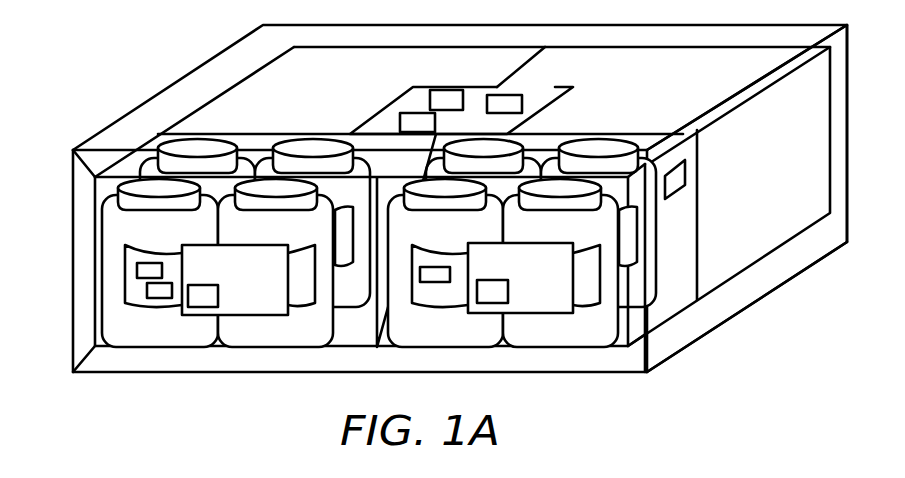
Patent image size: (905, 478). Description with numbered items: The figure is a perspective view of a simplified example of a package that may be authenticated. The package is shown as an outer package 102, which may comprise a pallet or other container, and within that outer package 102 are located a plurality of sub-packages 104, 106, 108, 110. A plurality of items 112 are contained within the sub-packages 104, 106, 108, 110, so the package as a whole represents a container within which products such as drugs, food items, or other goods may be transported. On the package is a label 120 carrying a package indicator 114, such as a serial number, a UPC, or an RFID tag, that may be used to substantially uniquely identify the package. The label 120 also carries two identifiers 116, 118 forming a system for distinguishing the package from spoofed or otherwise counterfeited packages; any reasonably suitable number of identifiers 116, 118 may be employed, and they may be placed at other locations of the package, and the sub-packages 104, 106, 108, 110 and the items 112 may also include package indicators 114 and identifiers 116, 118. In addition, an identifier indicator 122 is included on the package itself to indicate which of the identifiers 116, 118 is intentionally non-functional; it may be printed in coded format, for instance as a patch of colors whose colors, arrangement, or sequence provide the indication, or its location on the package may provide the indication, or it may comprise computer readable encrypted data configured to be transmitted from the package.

The outer package 102 is at (197, 87).
The sub-package 104 is at (737, 248).
The sub-package 106 is at (670, 296).
The sub-package 108 is at (280, 83).
The sub-package 110 is at (138, 148).
The items 112 is at (96, 213).
The package indicator 114 is at (400, 122).
The identifier 116 is at (430, 97).
The identifier 118 is at (522, 103).
The label 120 is at (573, 88).
The identifier indicator 122 is at (207, 313).